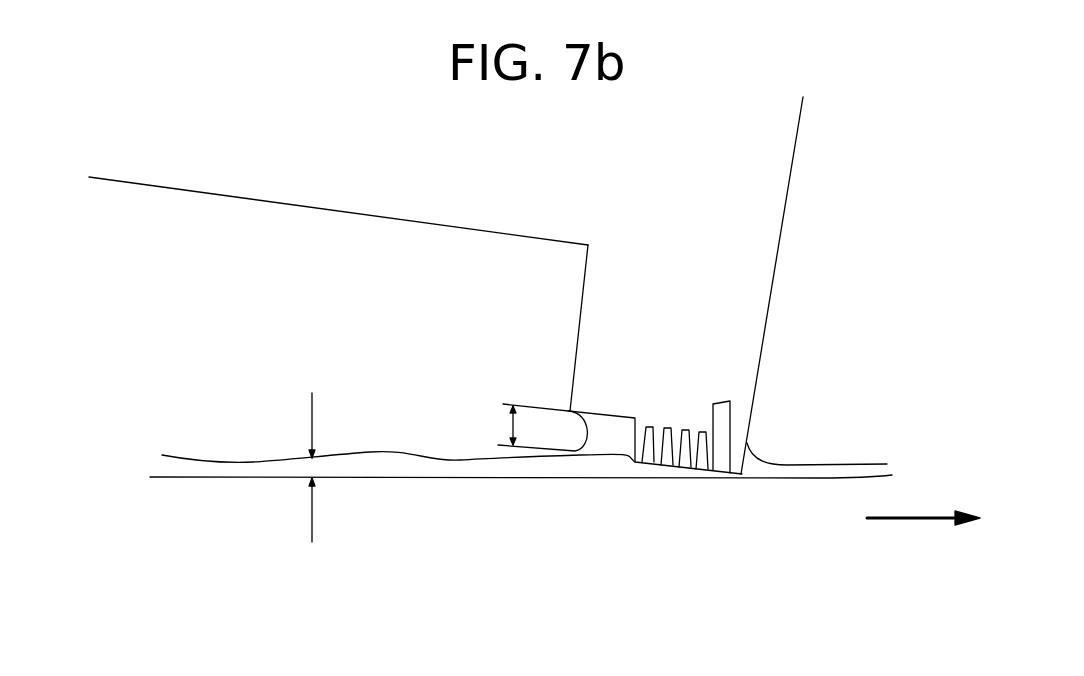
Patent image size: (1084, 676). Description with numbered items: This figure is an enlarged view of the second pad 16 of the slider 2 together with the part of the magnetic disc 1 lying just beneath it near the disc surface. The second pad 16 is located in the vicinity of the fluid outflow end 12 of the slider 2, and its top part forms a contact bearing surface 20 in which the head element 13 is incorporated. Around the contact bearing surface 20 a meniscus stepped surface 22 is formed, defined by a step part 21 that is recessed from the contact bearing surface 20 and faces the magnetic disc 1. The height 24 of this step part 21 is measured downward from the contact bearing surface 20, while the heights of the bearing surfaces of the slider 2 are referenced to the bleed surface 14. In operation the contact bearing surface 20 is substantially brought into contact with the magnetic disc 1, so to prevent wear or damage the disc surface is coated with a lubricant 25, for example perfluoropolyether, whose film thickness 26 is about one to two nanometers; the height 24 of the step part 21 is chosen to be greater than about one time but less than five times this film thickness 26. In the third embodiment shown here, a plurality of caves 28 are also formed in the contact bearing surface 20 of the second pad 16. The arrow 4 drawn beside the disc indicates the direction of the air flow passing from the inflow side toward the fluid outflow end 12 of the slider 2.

The magnetic disc 1 is at (509, 346).
The slider 2 is at (361, 284).
The flow direction arrow 4 is at (913, 520).
The fluid outflow end 12 is at (743, 473).
The head element 13 is at (730, 412).
The bleed surface 14 is at (265, 202).
The second pad 16 is at (633, 343).
The contact bearing surface 20 is at (687, 467).
The step part 21 is at (633, 440).
The meniscus stepped surface 22 is at (603, 417).
The height of the step part 24 is at (507, 428).
The lubricant 25 is at (242, 475).
The film thickness 26 is at (312, 468).
The caves 28 is at (663, 455).